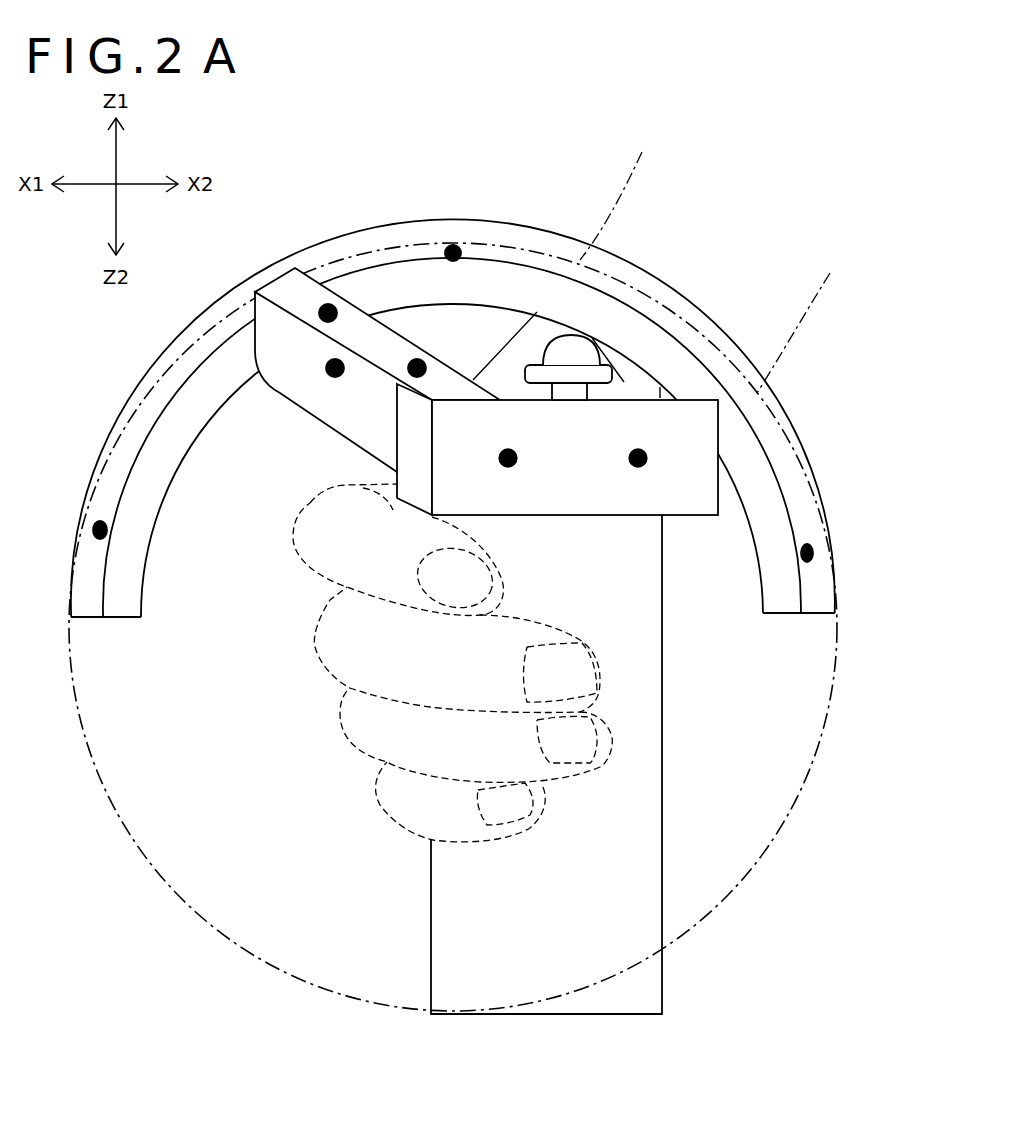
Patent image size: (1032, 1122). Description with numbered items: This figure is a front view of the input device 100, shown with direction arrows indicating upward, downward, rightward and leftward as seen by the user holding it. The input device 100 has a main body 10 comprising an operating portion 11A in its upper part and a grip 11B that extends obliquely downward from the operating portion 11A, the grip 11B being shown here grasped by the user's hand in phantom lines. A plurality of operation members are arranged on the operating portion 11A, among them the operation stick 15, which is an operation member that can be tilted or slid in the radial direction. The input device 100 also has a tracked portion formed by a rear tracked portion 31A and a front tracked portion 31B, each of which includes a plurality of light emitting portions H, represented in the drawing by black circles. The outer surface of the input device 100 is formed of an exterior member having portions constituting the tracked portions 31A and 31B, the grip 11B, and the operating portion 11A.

The input device 100 is at (728, 318).
The main body 10 is at (504, 570).
The operating portion 11A is at (707, 493).
The grip 11B is at (893, 522).
The rear tracked portion 31A is at (530, 223).
The front tracked portion 31B is at (336, 459).
The operation stick 15 is at (591, 374).
The light emitting portions H is at (517, 457).